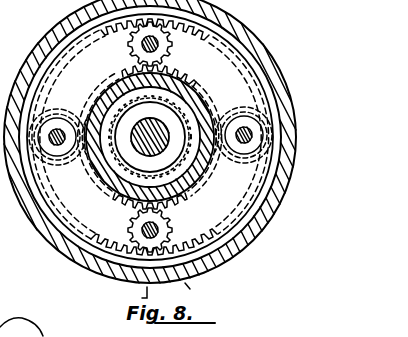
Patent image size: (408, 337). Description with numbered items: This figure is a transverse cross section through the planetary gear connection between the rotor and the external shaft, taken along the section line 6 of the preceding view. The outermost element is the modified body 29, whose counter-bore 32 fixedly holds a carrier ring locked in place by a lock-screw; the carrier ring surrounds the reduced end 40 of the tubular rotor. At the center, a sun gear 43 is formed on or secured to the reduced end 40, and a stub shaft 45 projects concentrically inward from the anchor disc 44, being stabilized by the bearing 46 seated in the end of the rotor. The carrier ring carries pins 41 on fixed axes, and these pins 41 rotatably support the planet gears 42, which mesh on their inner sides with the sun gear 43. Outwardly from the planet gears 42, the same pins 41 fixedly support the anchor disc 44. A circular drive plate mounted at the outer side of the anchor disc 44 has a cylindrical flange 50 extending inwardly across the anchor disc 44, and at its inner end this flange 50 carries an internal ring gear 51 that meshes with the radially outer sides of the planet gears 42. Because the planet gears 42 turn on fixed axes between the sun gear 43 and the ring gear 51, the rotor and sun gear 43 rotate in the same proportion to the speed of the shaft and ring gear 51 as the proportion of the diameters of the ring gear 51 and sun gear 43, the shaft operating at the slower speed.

The section line 6 is at (136, 300).
The modified body 29 is at (46, 49).
The counter-bore 32 is at (41, 226).
The reduced end of the rotor 40 is at (200, 175).
The pins 41 is at (141, 47).
The planet gears 42 is at (173, 57).
The sun gear 43 is at (181, 72).
The anchor disc 44 is at (247, 180).
The stub shaft 45 is at (137, 131).
The bearing 46 is at (173, 128).
The cylindrical flange 50 is at (208, 246).
The internal ring gear 51 is at (194, 237).